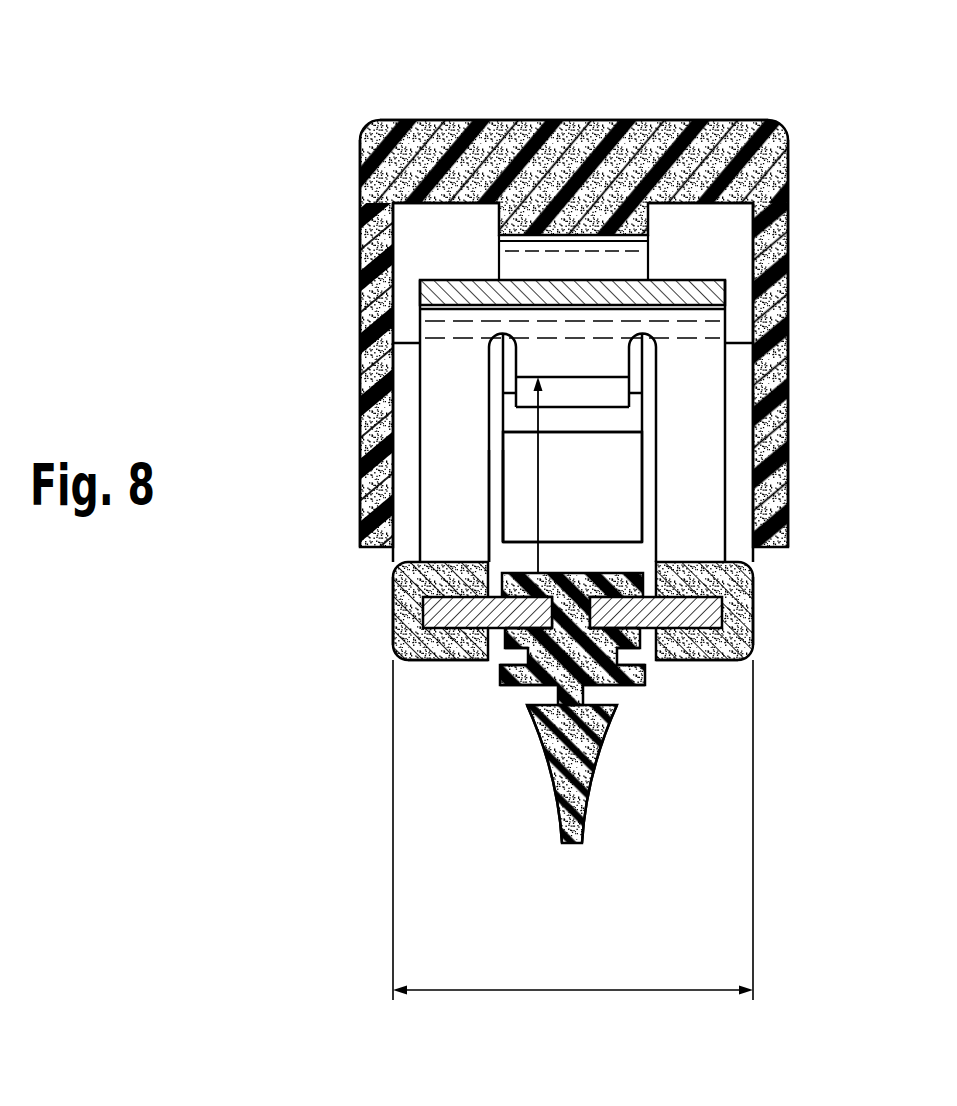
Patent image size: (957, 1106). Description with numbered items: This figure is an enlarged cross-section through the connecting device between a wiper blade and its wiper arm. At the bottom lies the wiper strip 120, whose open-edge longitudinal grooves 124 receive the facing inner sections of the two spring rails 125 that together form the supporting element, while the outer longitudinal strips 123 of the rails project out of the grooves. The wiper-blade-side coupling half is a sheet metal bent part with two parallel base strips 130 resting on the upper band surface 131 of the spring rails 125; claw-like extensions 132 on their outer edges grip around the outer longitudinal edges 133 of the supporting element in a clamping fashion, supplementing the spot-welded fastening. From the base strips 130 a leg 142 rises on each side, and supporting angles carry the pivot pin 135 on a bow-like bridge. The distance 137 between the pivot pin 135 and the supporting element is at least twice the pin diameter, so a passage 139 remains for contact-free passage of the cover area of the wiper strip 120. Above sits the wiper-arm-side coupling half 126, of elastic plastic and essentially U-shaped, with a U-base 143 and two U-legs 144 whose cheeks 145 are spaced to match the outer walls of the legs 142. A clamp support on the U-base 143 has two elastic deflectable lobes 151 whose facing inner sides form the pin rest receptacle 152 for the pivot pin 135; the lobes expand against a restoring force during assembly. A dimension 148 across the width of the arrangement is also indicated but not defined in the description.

The wiper strip 120 is at (541, 800).
The outer longitudinal strips 123 is at (468, 663).
The open-edge longitudinal grooves 124 is at (528, 740).
The spring rails 125 is at (485, 668).
The coupling half on the wiper-arm side 126 is at (683, 105).
The base strips 130 is at (420, 580).
The upper band surface 131 is at (470, 595).
The claw-like extensions 132 is at (413, 647).
The outer longitudinal edges 133 is at (417, 620).
The pivot pin 135 is at (535, 362).
The distance 137 is at (540, 480).
The passage 139 is at (605, 557).
The leg 142 is at (405, 420).
The U-base 143 is at (540, 135).
The U-legs 144 is at (378, 255).
The cheeks 145 is at (405, 532).
The width 148 is at (573, 830).
The elastic deflectable lobes 151 is at (524, 497).
The pin rest receptacle 152 is at (660, 268).